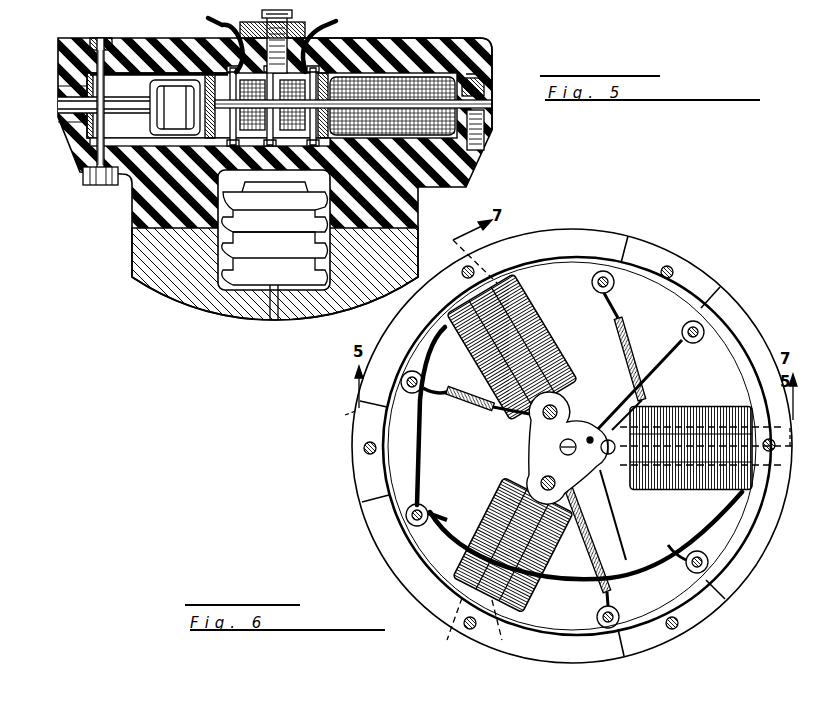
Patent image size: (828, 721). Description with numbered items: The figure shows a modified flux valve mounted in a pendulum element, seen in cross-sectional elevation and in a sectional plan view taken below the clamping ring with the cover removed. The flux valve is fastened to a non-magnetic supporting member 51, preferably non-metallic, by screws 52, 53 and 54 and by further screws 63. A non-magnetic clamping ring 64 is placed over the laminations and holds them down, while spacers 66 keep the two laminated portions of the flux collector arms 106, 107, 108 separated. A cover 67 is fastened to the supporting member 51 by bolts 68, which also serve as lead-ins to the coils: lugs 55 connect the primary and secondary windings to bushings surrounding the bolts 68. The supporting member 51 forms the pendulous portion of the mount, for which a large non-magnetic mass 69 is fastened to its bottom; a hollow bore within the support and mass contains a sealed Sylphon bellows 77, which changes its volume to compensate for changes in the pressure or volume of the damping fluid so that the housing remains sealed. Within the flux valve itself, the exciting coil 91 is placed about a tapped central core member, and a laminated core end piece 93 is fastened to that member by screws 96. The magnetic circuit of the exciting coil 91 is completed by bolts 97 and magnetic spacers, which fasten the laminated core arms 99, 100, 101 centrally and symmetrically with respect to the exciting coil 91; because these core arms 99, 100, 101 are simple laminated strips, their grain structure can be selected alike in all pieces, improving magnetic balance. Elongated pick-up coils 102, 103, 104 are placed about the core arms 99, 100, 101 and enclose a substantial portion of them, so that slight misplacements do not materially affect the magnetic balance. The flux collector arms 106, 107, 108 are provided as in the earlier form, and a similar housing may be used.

In FIG. 5, the supporting member 51 is at (416, 195).
In FIG. 6, the screw 52 is at (768, 455).
In FIG. 6, the screw 53 is at (470, 630).
In FIG. 5, the screw 54 is at (484, 80).
In FIG. 6, the screw 54 is at (492, 243).
In FIG. 5, the lugs 55 is at (105, 185).
In FIG. 6, the lugs 55 is at (447, 396).
In FIG. 6, the screws 63 is at (672, 268).
In FIG. 5, the clamping ring 64 is at (58, 88).
In FIG. 5, the spacers 66 is at (58, 118).
In FIG. 6, the spacers 66 is at (705, 283).
In FIG. 5, the cover 67 is at (412, 38).
In FIG. 5, the bolts 68 is at (104, 38).
In FIG. 6, the bolts 68 is at (414, 375).
In FIG. 5, the non-magnetic mass 69 is at (178, 292).
In FIG. 5, the Sylphon bellows 77 is at (272, 184).
In FIG. 5, the exciting coil 91 is at (345, 72).
In FIG. 6, the exciting coil 91 is at (591, 438).
In FIG. 6, the laminated core end piece 93 is at (560, 448).
In FIG. 6, the screws 96 is at (600, 452).
In FIG. 6, the bolts 97 is at (560, 410).
In FIG. 6, the core arm 99 is at (640, 400).
In FIG. 6, the core arm 100 is at (587, 497).
In FIG. 6, the core arm 101 is at (505, 412).
In FIG. 6, the pick-up coil 102 is at (540, 320).
In FIG. 6, the pick-up coil 103 is at (690, 407).
In FIG. 6, the pick-up coil 104 is at (530, 590).
In FIG. 6, the flux collector arm 106 is at (560, 232).
In FIG. 5, the flux collector arm 107 is at (487, 112).
In FIG. 6, the flux collector arm 107 is at (745, 330).
In FIG. 6, the flux collector arm 108 is at (392, 556).